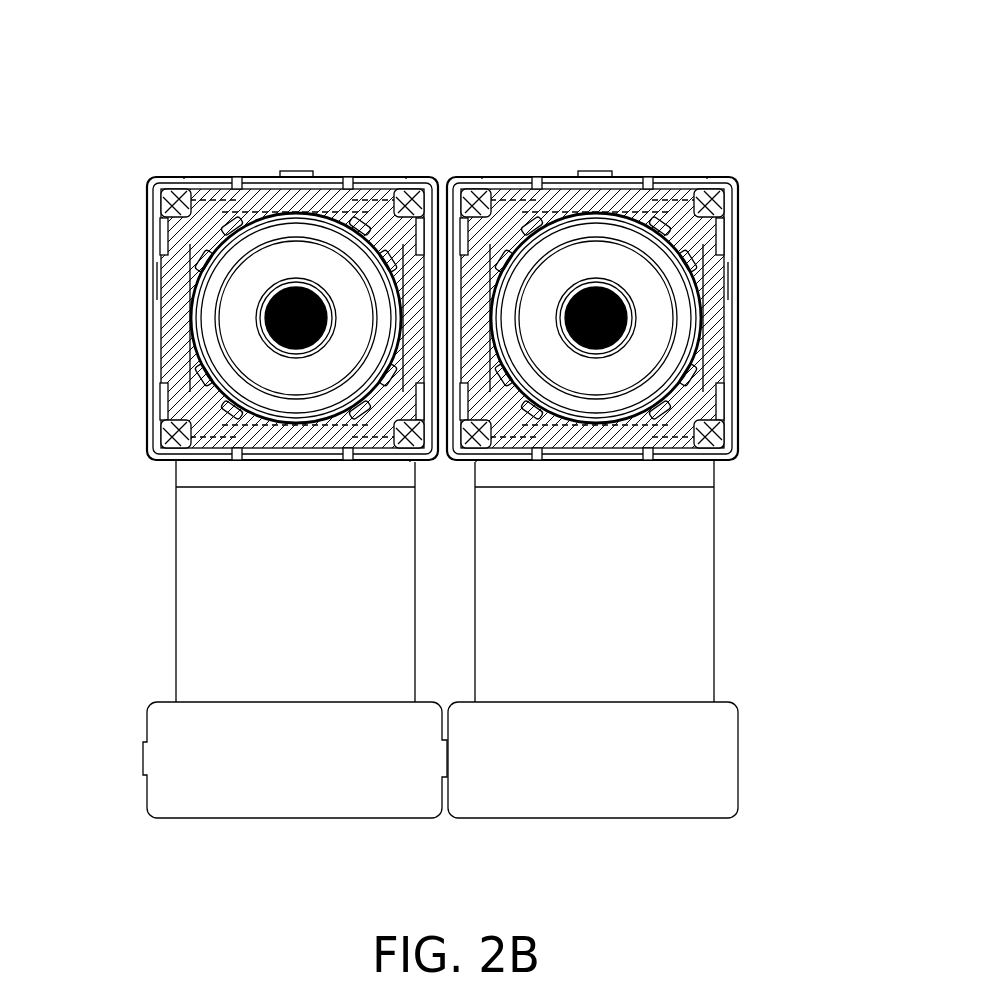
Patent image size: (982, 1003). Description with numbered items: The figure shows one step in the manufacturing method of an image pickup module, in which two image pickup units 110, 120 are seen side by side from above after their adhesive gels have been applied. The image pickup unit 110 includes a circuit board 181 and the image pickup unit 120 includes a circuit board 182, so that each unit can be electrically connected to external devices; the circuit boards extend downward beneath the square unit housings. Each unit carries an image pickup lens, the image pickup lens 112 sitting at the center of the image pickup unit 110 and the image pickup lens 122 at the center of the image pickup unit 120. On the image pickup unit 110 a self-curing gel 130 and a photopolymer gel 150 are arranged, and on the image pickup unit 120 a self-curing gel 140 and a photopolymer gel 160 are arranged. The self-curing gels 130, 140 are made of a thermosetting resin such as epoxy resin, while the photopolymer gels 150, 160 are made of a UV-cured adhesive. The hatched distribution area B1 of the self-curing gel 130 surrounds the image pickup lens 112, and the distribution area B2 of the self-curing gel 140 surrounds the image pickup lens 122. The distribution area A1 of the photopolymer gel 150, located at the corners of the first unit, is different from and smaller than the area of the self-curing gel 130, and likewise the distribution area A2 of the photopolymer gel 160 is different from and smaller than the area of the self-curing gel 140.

The image pickup unit 110 is at (293, 98).
The image pickup unit 120 is at (297, 98).
The image pickup lens 112 is at (272, 262).
The image pickup lens 122 is at (596, 275).
The self-curing gel 130 is at (168, 305).
The self-curing gel 140 is at (416, 305).
The photopolymer gel 150 is at (173, 197).
The photopolymer gel 160 is at (635, 322).
The circuit board 181 is at (185, 603).
The circuit board 182 is at (640, 582).
The distribution area of the photopolymer gel A1 is at (184, 176).
The distribution area of the photopolymer gel A2 is at (597, 322).
The distribution area of the self-curing gel B1 is at (160, 281).
The distribution area of the self-curing gel B2 is at (763, 279).